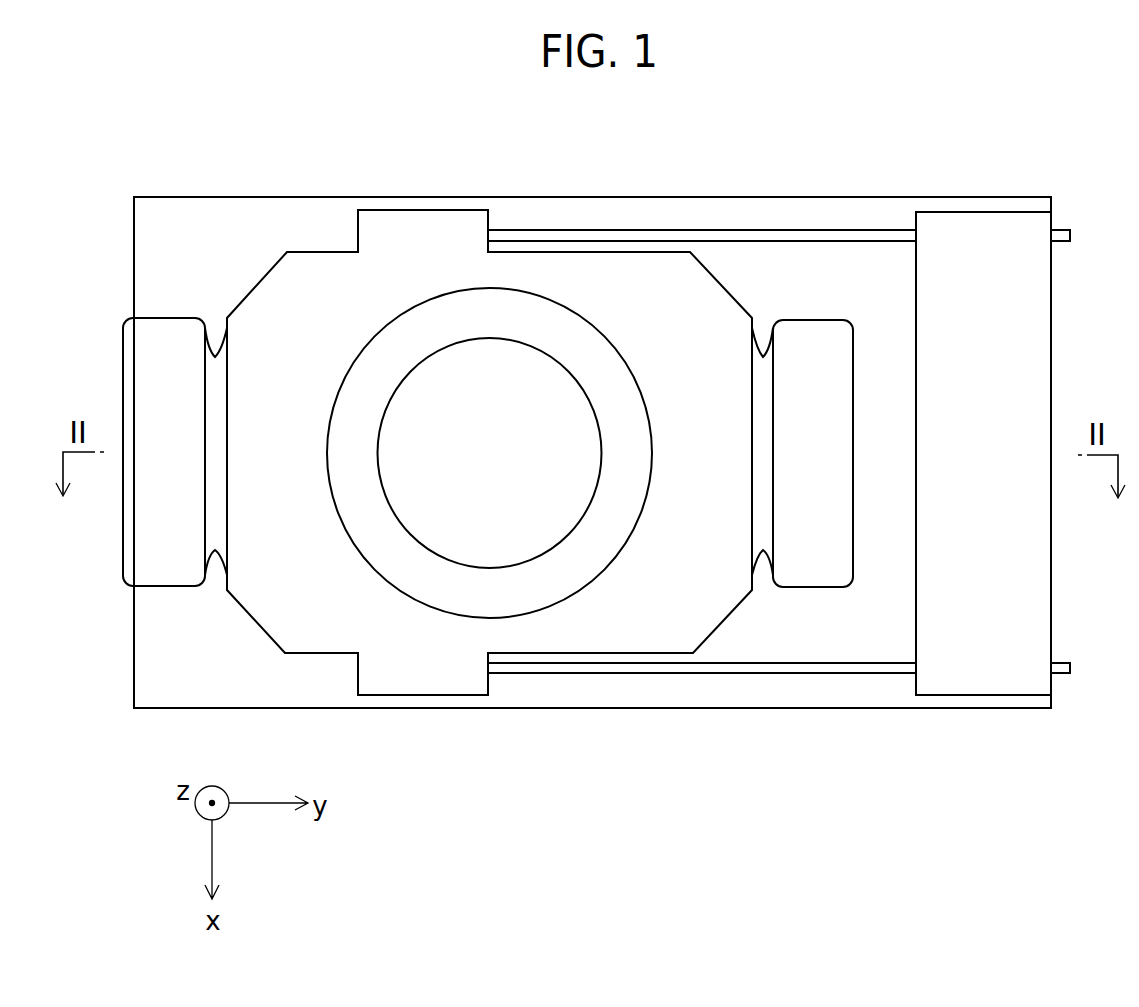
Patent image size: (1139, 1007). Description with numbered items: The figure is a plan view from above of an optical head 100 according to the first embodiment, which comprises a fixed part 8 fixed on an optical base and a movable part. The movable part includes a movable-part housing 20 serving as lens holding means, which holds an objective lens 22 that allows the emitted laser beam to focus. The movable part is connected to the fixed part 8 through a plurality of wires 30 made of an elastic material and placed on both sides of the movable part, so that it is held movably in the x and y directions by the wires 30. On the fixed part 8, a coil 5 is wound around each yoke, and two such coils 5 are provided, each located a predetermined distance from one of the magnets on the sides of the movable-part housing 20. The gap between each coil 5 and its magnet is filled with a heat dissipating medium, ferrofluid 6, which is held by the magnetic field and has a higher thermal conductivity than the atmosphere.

The optical head 100 is at (166, 134).
The movable-part housing 20 is at (538, 268).
The objective lens 22 is at (454, 383).
The wires 30 is at (770, 237).
The fixed part 8 is at (967, 238).
The coil 5 is at (167, 573).
The ferrofluid 6 is at (208, 547).